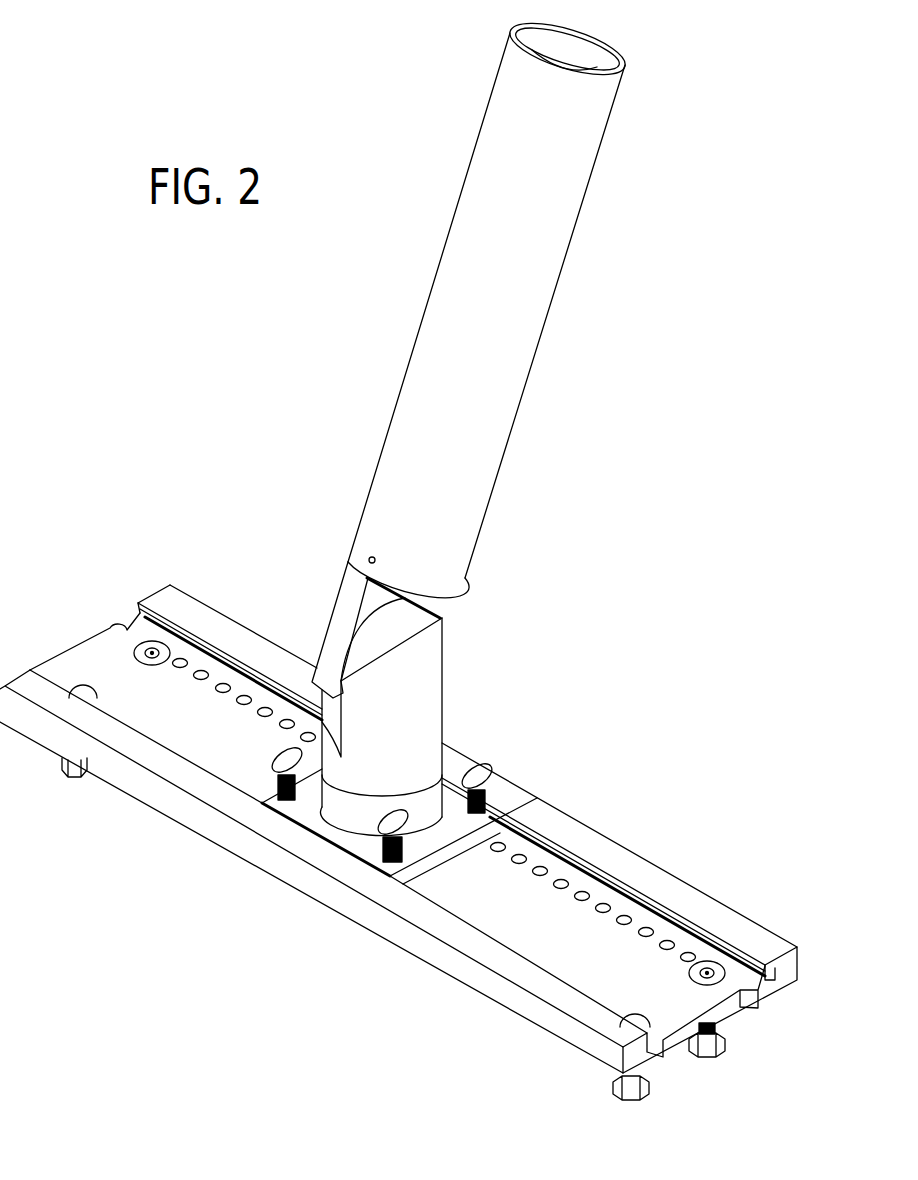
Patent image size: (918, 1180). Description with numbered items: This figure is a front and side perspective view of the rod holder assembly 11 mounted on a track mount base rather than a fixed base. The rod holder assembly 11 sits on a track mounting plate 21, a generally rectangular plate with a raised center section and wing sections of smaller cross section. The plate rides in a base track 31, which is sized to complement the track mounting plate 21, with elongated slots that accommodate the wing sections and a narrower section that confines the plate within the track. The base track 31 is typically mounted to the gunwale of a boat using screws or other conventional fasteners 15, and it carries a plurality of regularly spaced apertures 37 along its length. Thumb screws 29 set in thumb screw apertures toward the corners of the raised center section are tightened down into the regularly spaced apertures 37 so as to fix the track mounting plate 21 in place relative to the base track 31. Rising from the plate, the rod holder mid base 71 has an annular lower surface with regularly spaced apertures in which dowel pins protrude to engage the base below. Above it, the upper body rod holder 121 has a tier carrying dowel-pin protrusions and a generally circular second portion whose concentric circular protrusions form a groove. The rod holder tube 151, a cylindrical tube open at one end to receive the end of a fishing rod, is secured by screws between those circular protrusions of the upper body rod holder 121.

The rod holder assembly 11 is at (571, 403).
The fasteners 15 is at (713, 1028).
The track mounting plate 21 is at (510, 827).
The thumb screws 29 is at (480, 762).
The base track 31 is at (200, 622).
The regularly spaced apertures 37 is at (607, 903).
The rod holder mid base 71 is at (443, 655).
The upper body rod holder 121 is at (333, 598).
The rod holder tube 151 is at (556, 290).